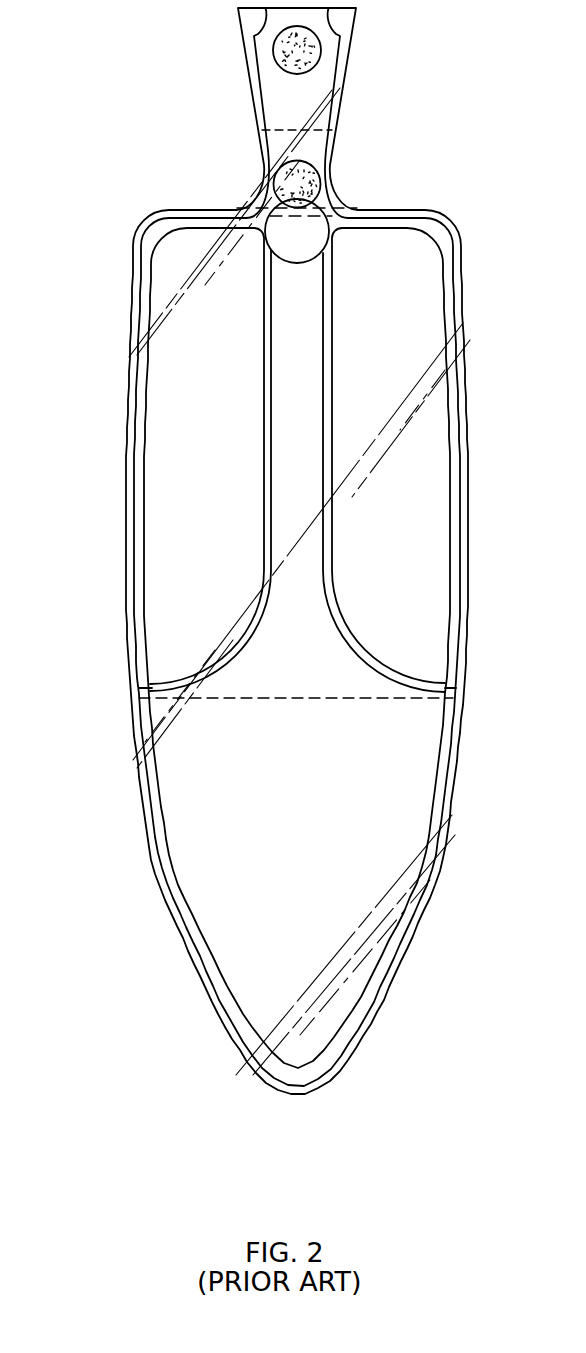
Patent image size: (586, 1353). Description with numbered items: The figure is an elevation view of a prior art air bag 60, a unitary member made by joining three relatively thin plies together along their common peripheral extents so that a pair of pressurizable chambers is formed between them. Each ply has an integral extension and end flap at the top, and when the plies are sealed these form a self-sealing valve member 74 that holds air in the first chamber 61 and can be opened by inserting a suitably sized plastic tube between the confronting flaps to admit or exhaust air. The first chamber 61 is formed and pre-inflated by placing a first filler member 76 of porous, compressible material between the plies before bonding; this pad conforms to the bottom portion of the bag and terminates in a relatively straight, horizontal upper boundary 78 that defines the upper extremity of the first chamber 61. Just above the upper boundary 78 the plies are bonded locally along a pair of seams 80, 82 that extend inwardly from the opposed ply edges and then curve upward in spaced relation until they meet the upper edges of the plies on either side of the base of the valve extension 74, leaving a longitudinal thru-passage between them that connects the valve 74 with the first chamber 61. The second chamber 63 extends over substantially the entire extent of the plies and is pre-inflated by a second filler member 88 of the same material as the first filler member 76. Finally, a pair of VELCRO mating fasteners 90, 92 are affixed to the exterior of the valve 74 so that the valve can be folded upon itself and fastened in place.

The air bag 60 is at (126, 824).
The first chamber 61 is at (445, 763).
The second chamber 63 is at (445, 631).
The self-sealing valve member 74 is at (277, 105).
The first filler member 76 is at (313, 937).
The upper boundary 78 is at (310, 697).
The seam 80 is at (333, 323).
The seam 82 is at (264, 428).
The second filler member 88 is at (405, 551).
The VELCRO mating fastener 90 is at (322, 51).
The VELCRO mating fastener 92 is at (286, 183).